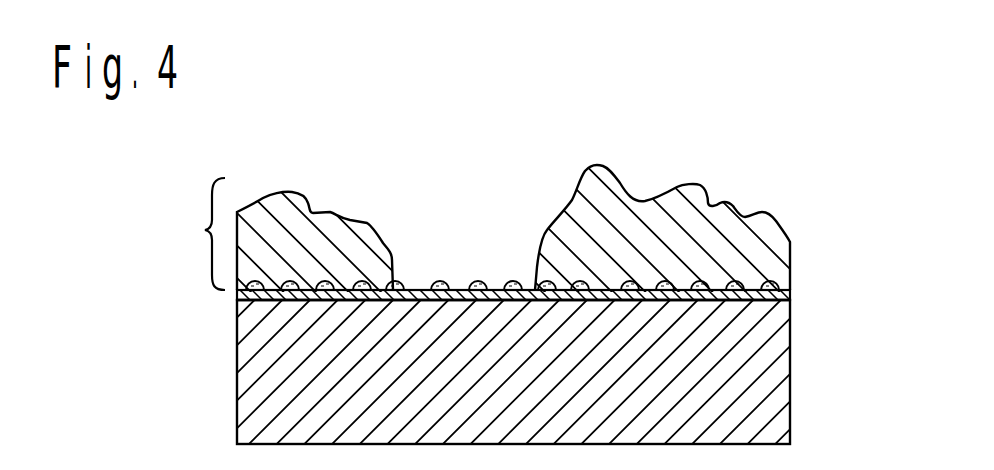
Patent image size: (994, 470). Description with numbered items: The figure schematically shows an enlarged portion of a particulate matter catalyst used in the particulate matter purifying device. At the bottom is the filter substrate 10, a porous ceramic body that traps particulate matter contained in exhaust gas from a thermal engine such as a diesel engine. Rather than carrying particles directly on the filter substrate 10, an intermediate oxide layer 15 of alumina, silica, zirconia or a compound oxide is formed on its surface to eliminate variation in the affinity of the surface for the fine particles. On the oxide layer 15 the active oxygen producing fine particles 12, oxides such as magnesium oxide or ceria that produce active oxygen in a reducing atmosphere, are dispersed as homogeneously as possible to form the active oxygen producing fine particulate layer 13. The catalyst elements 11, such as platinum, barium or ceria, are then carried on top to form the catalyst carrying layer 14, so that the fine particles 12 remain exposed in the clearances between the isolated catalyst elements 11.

The filter substrate 10 is at (755, 395).
The catalyst element 11 is at (288, 203).
The active oxygen producing fine particles 12 is at (512, 282).
The active oxygen producing fine particulate layer 13 is at (803, 287).
The catalyst carrying layer 14 is at (485, 226).
The oxide layer 15 is at (805, 301).